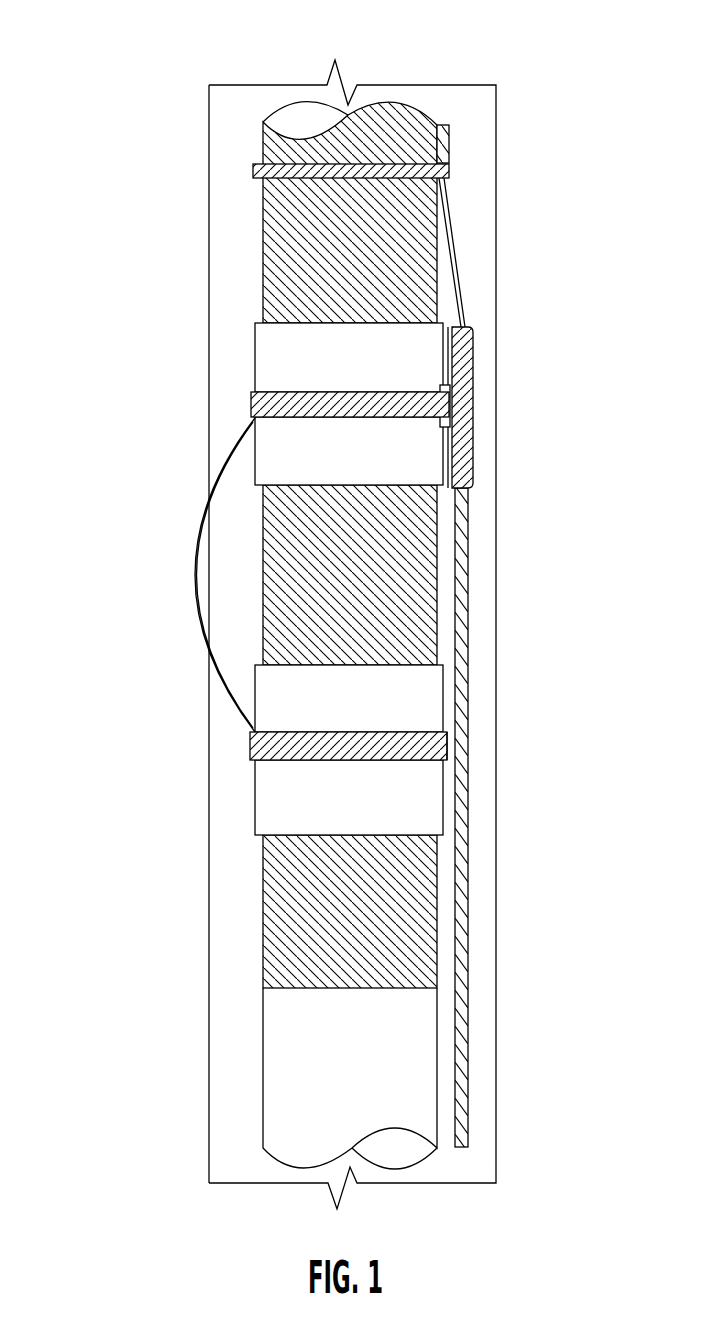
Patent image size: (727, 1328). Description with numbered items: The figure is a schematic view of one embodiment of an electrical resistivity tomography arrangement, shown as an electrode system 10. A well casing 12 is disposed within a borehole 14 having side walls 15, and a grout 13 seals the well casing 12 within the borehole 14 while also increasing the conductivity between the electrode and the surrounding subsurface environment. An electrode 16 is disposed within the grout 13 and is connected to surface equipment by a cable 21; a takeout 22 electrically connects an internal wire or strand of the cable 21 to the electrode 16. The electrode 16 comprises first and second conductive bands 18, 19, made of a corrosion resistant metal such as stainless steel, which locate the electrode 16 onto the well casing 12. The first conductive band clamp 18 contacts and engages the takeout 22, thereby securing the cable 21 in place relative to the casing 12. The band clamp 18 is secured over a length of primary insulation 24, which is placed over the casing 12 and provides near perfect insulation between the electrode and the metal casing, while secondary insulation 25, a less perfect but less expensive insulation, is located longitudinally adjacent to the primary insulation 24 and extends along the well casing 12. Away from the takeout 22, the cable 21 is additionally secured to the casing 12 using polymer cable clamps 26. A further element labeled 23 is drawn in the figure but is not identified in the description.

The electrode system 10 is at (152, 103).
The well casing 12 is at (420, 1025).
The grout 13 is at (250, 750).
The borehole 14 is at (200, 950).
The side walls 15 is at (209, 260).
The electrode 16 is at (196, 607).
The conductive band clamp 18 is at (253, 412).
The second conductive band 19 is at (447, 748).
The cable 21 is at (447, 273).
The takeout 22 is at (473, 347).
The wire 23 is at (447, 385).
The primary insulation 24 is at (428, 470).
The secondary insulation 25 is at (272, 542).
The polymer cable clamps 26 is at (253, 173).